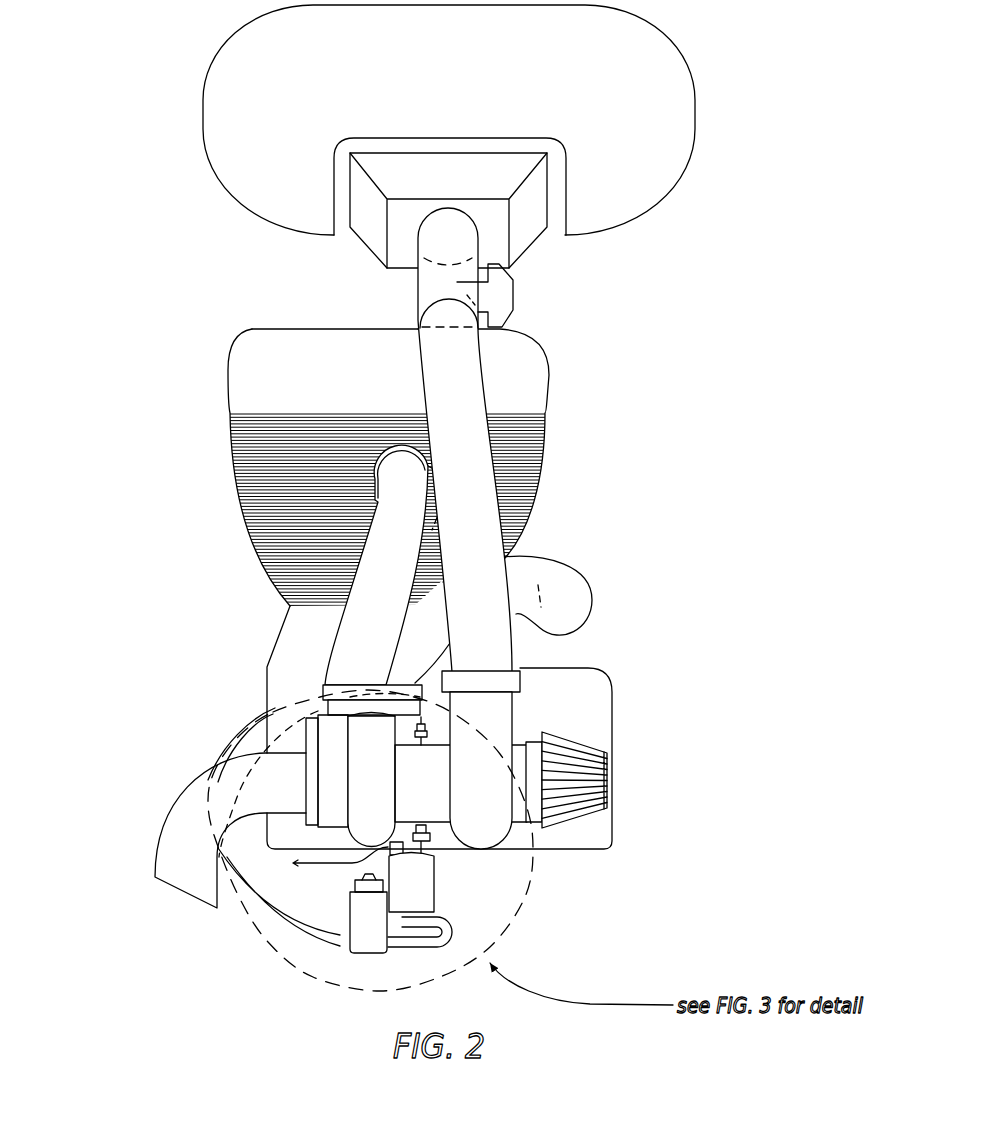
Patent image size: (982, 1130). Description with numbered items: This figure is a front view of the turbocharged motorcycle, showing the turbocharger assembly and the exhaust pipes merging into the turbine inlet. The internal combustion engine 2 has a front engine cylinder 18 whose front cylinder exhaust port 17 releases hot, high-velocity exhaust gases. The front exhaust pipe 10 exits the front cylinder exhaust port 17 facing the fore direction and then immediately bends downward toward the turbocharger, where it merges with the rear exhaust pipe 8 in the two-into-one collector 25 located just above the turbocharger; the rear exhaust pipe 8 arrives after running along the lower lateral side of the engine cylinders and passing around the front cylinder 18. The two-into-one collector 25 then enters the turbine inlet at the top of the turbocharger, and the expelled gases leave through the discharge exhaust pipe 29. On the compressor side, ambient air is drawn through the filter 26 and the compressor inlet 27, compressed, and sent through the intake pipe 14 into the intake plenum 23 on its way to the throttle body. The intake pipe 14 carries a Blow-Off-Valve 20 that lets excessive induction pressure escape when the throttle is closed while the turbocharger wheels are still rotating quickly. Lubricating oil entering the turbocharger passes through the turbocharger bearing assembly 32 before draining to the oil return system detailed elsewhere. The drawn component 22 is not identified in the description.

The internal combustion engine 2 is at (270, 632).
The rear exhaust pipe 8 is at (598, 613).
The front exhaust pipe 10 is at (395, 575).
The intake pipe 14 is at (456, 409).
The front cylinder exhaust port 17 is at (409, 482).
The front engine cylinder 18 is at (253, 391).
The Blow-Off-Valve 20 is at (504, 294).
The air box 22 is at (702, 66).
The intake plenum 23 is at (527, 210).
The two-into-one collector 25 is at (403, 638).
The filter 26 is at (596, 777).
The compressor inlet 27 is at (525, 807).
The discharge exhaust pipe 29 is at (190, 841).
The turbocharger bearing assembly 32 is at (428, 789).